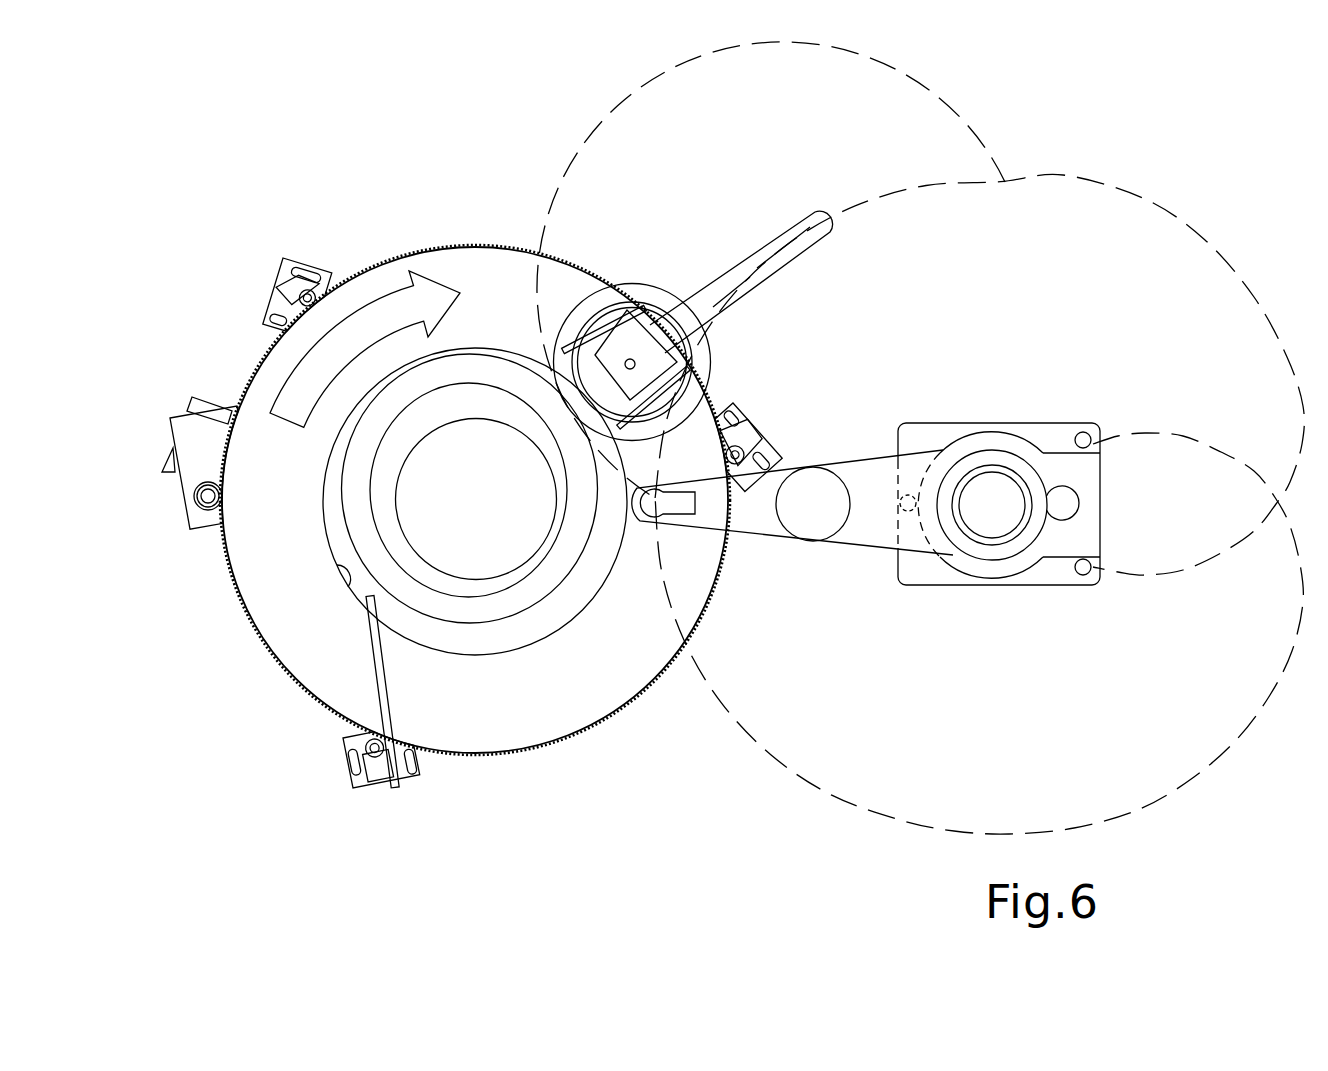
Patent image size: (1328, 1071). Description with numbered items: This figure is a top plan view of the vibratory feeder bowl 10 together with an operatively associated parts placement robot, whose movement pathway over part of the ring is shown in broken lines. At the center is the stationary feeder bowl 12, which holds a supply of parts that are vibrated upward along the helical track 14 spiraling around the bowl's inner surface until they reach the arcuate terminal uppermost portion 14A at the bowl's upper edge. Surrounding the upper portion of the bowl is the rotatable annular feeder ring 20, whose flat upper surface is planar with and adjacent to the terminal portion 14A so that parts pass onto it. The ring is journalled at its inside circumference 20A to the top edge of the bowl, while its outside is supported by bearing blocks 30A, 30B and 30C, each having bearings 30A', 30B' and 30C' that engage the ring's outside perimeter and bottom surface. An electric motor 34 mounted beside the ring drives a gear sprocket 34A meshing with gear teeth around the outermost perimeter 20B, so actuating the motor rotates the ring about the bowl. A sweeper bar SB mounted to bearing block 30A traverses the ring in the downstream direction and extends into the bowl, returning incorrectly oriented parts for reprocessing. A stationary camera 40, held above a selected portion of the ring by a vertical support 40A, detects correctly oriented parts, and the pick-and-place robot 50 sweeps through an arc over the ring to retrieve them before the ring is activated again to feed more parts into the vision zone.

The vibratory feeder bowl 10 is at (603, 178).
The feeder bowl 12 is at (500, 347).
The helical track 14 is at (568, 553).
The arcuate terminal uppermost portion 14A is at (365, 402).
The annular feeder ring 20 is at (606, 688).
The inside circumference 20A is at (337, 565).
The outermost perimeter 20B is at (570, 746).
The bearing block 30A is at (402, 793).
The first clamp jaw 30A' is at (330, 762).
The bearing block 30B is at (307, 260).
The second clamp jaw 30B' is at (342, 259).
The bearing block 30C is at (762, 420).
The third clamp jaw 30C' is at (776, 426).
The electric motor 34 is at (202, 430).
The gear sprocket 34A is at (198, 510).
The camera 40 is at (640, 284).
The vertical support 40A is at (716, 300).
The pick-and-place robot 50 is at (879, 362).
The sweeper bar SB is at (392, 689).